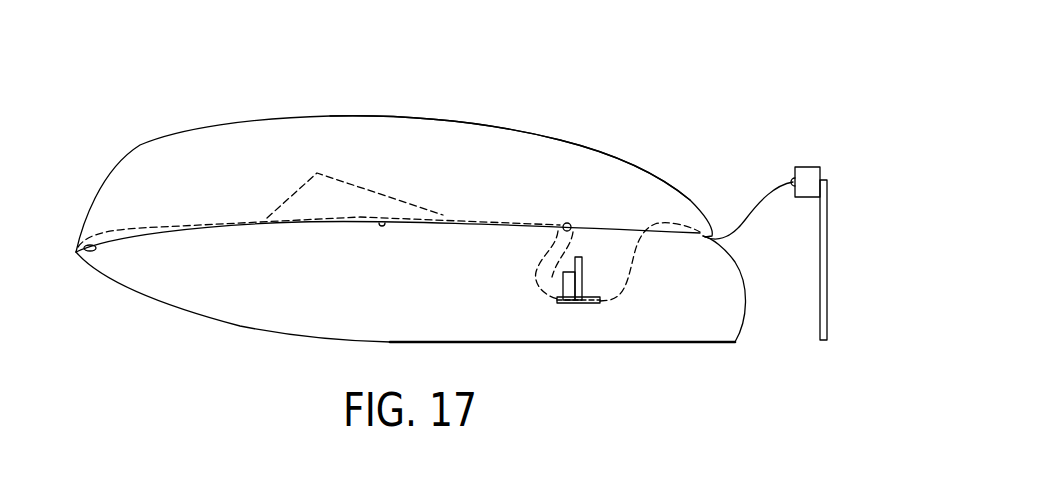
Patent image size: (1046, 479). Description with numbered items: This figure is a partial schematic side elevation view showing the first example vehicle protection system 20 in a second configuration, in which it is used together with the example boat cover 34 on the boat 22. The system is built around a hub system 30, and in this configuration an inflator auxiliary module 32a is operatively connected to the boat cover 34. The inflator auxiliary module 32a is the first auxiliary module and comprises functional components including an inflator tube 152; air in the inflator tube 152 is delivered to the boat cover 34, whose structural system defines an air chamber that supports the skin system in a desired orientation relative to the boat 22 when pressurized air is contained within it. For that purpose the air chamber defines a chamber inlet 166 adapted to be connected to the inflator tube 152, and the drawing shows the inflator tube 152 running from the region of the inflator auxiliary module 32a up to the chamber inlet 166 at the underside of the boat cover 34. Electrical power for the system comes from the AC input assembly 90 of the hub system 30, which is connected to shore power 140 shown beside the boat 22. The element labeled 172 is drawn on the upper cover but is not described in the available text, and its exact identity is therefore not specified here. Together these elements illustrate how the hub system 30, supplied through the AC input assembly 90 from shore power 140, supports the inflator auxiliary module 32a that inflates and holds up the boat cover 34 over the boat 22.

The vehicle protection system 20 is at (806, 96).
The boat 22 is at (93, 310).
The hub system 30 is at (606, 258).
The inflator auxiliary module 32a is at (575, 303).
The boat cover 34 is at (565, 135).
The AC input assembly 90 is at (763, 205).
The shore power 140 is at (832, 165).
The inflator tube 152 is at (550, 263).
The chamber inlet 166 is at (567, 223).
The upper shell 172 is at (178, 160).